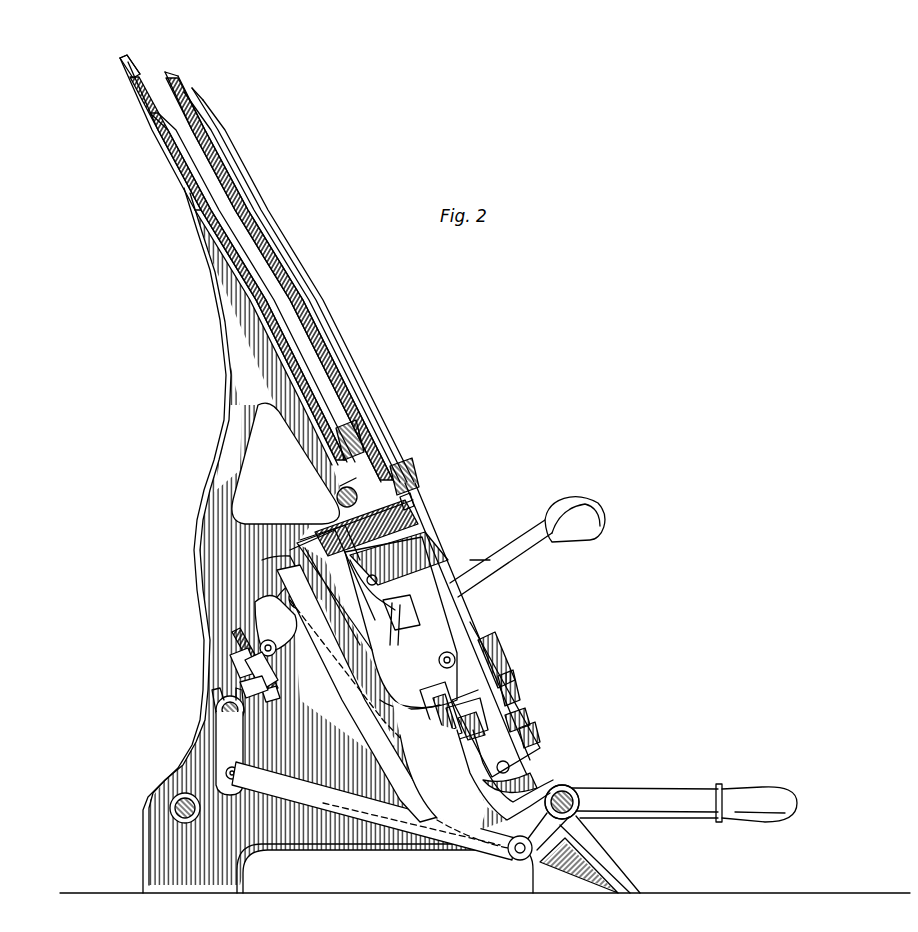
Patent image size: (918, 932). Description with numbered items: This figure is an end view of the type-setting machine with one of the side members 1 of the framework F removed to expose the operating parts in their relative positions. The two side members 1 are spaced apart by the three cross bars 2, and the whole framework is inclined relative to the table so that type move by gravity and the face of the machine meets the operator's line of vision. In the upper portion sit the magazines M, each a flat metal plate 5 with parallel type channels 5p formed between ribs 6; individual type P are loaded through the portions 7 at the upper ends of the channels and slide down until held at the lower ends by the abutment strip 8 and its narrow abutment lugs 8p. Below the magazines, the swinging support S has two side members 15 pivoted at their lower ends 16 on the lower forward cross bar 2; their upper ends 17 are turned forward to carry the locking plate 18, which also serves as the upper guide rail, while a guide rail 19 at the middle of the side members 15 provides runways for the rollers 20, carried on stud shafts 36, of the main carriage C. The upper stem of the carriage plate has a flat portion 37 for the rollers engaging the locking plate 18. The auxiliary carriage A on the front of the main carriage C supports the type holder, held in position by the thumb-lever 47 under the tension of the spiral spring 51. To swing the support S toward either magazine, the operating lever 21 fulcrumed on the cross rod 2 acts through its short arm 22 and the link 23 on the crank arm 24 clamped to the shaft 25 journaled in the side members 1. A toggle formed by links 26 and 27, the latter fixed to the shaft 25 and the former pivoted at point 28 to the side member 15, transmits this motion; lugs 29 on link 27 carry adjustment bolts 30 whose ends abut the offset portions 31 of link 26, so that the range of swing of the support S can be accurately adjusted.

The side member 1 is at (391, 540).
The cross bar 2 is at (340, 495).
The magazine plate 5 is at (140, 92).
The type channel 5p is at (155, 118).
The rib 6 is at (206, 133).
The channel end portion 7 is at (134, 57).
The abutment strip 8 is at (398, 478).
The abutment lug 8p is at (414, 490).
The side member 15 is at (357, 710).
The lower end 16 is at (565, 785).
The upper end 17 is at (333, 520).
The locking plate 18 is at (340, 527).
The guide rail 19 is at (453, 723).
The roller 20 is at (438, 708).
The operating lever 21 is at (627, 793).
The short arm 22 is at (565, 822).
The link 23 is at (320, 794).
The crank arm 24 is at (238, 763).
The shaft 25 is at (222, 710).
The toggle link 26 is at (265, 620).
The toggle link 27 is at (237, 678).
The pivot point 28 is at (280, 557).
The lug 29 is at (240, 660).
The adjustment bolt 30 is at (240, 640).
The offset portion 31 is at (250, 613).
The stud shaft 36 is at (452, 700).
The flat portion 37 is at (408, 506).
The thumb-lever 47 is at (518, 712).
The spiral spring 51 is at (505, 706).
The auxiliary carriage A is at (527, 637).
The main carriage C is at (377, 604).
The guide bar D is at (416, 514).
The framework F is at (286, 463).
The magazine M is at (210, 193).
The type P is at (357, 444).
The swinging support S is at (472, 775).